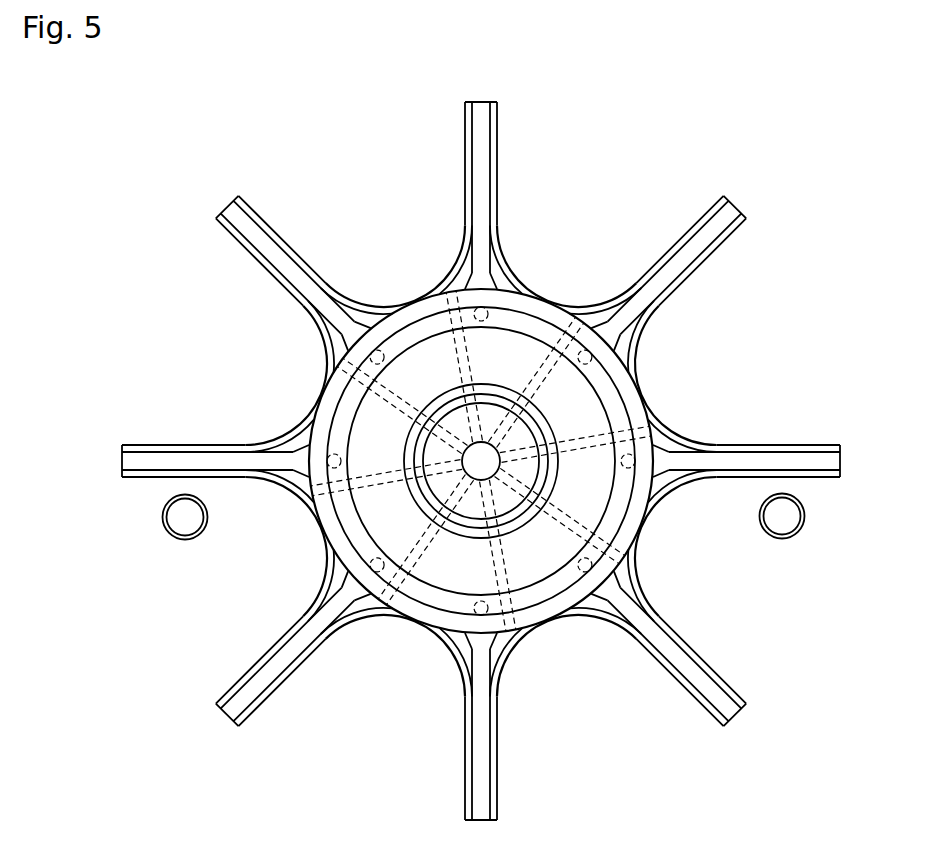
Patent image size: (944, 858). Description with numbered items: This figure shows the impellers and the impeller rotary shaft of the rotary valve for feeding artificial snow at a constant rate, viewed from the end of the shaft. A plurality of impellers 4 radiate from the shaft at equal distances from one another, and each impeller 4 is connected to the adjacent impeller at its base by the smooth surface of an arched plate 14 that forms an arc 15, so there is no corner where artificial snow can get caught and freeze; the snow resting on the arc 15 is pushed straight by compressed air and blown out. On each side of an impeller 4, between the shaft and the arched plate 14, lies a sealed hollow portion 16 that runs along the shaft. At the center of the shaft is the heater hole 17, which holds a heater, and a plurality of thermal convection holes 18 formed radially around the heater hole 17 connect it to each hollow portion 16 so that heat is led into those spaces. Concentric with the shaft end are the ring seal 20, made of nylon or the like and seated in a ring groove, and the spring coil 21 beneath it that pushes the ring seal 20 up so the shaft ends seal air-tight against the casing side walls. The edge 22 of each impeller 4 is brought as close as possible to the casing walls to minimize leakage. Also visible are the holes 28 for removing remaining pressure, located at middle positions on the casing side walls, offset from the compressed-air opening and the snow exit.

The impeller 4 is at (481, 113).
The arched plate 14 is at (512, 257).
The arc 15 is at (400, 298).
The hollow portion 16 is at (457, 270).
The heater hole 17 is at (478, 462).
The thermal convection hole 18 is at (416, 553).
The ring seal 20 is at (608, 385).
The spring coil 21 is at (632, 455).
The edge of impeller 22 is at (233, 208).
The hole for removing remaining pressure 28 is at (183, 522).